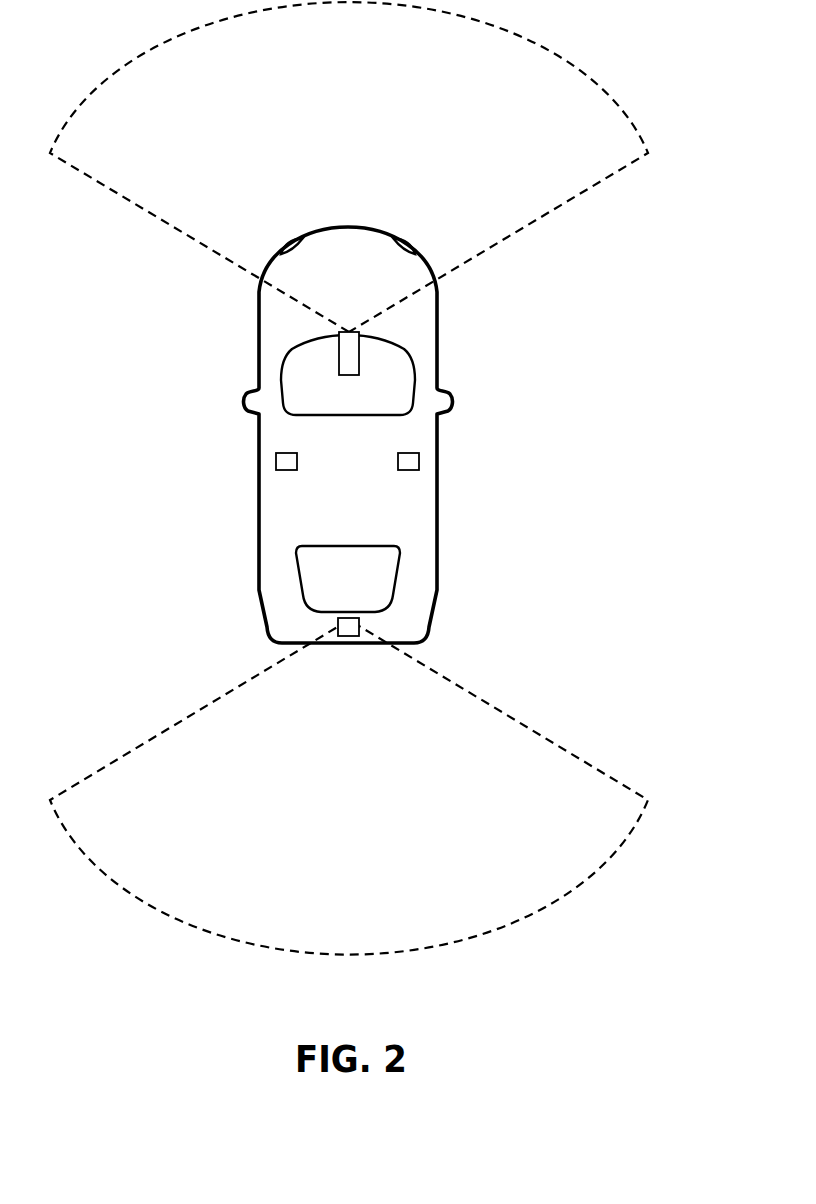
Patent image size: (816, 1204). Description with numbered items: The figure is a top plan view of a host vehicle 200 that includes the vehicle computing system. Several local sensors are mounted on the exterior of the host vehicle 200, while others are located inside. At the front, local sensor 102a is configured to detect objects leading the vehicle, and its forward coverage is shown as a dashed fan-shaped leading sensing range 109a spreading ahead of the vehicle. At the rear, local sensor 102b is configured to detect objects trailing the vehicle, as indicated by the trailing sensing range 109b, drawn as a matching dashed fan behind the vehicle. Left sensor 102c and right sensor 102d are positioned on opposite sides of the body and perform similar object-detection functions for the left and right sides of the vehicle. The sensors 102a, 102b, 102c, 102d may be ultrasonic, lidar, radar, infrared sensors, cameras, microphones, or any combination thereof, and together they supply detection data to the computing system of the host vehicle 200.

The host vehicle 200 is at (637, 442).
The local sensor 102a is at (349, 360).
The local sensor 102b is at (348, 628).
The left sensor 102c is at (286, 462).
The right sensor 102d is at (409, 462).
The leading sensing range 109a is at (530, 226).
The trailing sensing range 109b is at (623, 783).